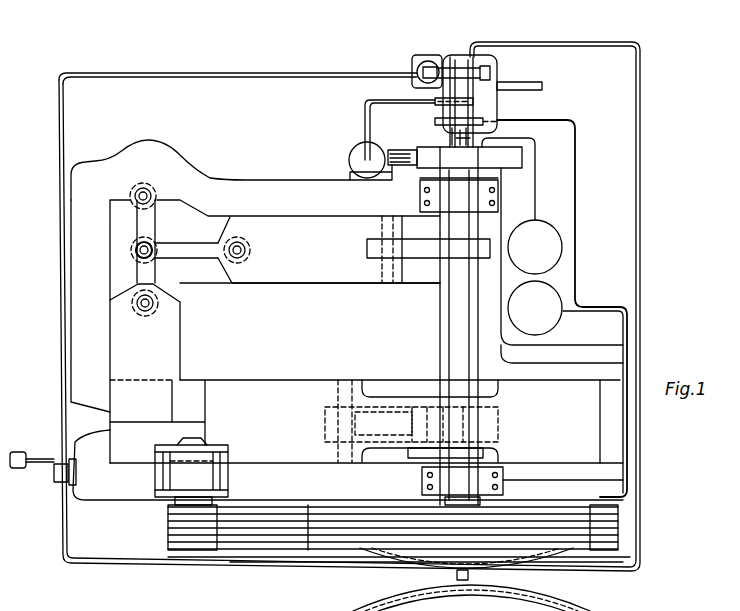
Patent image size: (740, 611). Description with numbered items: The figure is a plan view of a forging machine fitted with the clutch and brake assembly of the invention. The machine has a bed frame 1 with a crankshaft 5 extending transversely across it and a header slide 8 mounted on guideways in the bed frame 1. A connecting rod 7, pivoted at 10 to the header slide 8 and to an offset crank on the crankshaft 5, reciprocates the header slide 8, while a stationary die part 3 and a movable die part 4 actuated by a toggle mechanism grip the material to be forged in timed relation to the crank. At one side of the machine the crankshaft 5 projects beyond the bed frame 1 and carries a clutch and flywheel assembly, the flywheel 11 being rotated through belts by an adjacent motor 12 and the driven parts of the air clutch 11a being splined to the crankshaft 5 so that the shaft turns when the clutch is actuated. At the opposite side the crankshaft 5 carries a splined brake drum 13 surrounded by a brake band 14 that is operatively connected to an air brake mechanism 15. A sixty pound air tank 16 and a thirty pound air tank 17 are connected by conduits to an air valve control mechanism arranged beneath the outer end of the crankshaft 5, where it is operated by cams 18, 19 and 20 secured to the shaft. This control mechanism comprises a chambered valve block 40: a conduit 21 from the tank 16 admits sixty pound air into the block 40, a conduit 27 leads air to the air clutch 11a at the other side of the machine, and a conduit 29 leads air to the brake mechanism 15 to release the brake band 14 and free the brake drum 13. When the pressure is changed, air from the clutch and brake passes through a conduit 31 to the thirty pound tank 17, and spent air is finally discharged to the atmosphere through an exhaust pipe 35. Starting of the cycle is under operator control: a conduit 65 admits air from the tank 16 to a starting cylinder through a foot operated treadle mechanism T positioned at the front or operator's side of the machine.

The bed frame 1 is at (366, 476).
The stationary die part 3 is at (143, 447).
The movable die part 4 is at (135, 357).
The crankshaft 5 is at (460, 281).
The connecting rod 7 is at (392, 382).
The header slide 8 is at (400, 339).
The pivot 10 is at (345, 430).
The flywheel 11 is at (330, 553).
The air clutch 11a is at (432, 570).
The motor 12 is at (191, 471).
The brake drum 13 is at (416, 176).
The brake band 14 is at (510, 162).
The air brake mechanism 15 is at (348, 160).
The sixty pound air tank 16 is at (552, 320).
The thirty pound air tank 17 is at (541, 228).
The cam 18 is at (438, 124).
The cam 19 is at (438, 104).
The cam 20 is at (447, 78).
The conduit 21 is at (577, 230).
The conduit 27 is at (478, 46).
The conduit 29 is at (390, 100).
The conduit 31 is at (538, 172).
The exhaust pipe 35 is at (512, 85).
The chambered valve block 40 is at (500, 104).
The conduit 65 is at (290, 73).
The foot operated treadle mechanism T is at (45, 458).